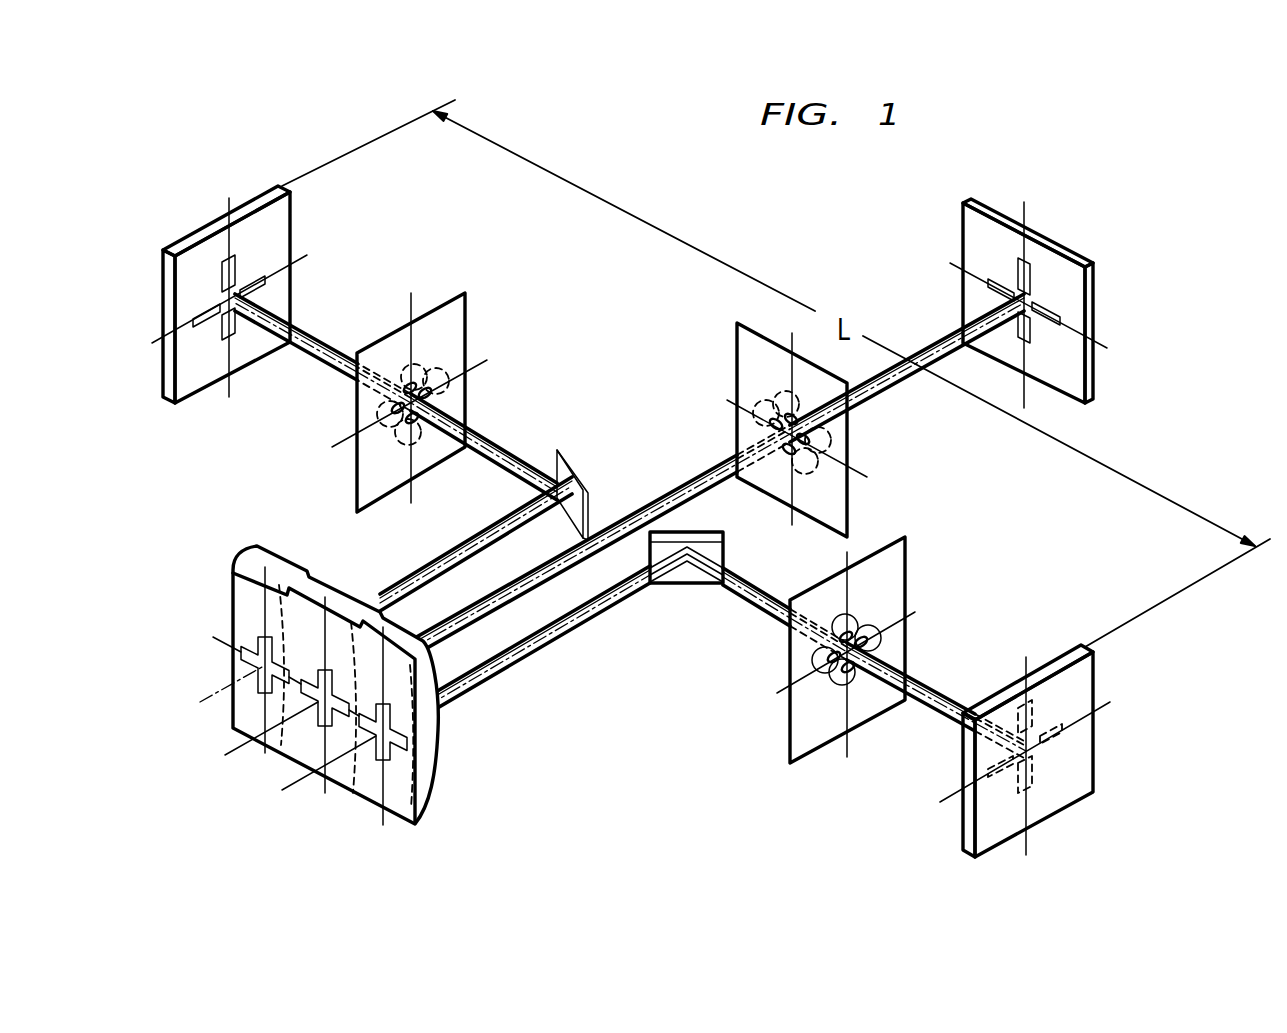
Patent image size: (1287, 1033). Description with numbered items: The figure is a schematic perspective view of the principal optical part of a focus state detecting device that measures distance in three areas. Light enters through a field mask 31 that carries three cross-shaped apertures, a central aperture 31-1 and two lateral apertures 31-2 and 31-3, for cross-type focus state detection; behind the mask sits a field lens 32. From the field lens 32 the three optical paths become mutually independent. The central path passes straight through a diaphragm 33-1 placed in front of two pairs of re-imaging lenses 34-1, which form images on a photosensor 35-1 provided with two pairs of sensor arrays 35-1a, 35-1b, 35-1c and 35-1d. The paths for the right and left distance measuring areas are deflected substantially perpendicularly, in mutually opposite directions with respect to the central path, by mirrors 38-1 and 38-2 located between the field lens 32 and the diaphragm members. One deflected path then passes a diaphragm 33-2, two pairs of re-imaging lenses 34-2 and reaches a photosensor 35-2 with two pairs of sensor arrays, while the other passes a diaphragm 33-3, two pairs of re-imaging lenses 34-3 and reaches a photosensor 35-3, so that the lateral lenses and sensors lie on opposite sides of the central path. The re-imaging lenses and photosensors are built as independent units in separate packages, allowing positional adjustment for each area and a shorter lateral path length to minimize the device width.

The field mask 31 is at (313, 711).
The central aperture 31-1 is at (302, 716).
The aperture 31-2 is at (361, 735).
The aperture 31-3 is at (256, 690).
The field lens 32 is at (430, 780).
The diaphragm 33-1 is at (743, 363).
The diaphragm 33-2 is at (905, 543).
The diaphragm 33-3 is at (433, 322).
The re-imaging lenses 34-1 is at (818, 438).
The re-imaging lenses 34-2 is at (905, 605).
The re-imaging lenses 34-3 is at (440, 370).
The photosensor 35-1 is at (1038, 295).
The sensor array 35-1a is at (1030, 265).
The sensor array 35-1b is at (1031, 338).
The sensor array 35-1c is at (1061, 308).
The sensor array 35-1d is at (1000, 283).
The photosensor 35-2 is at (1092, 681).
The photosensor 35-3 is at (282, 215).
The mirror 38-1 is at (687, 584).
The mirror 38-2 is at (578, 464).